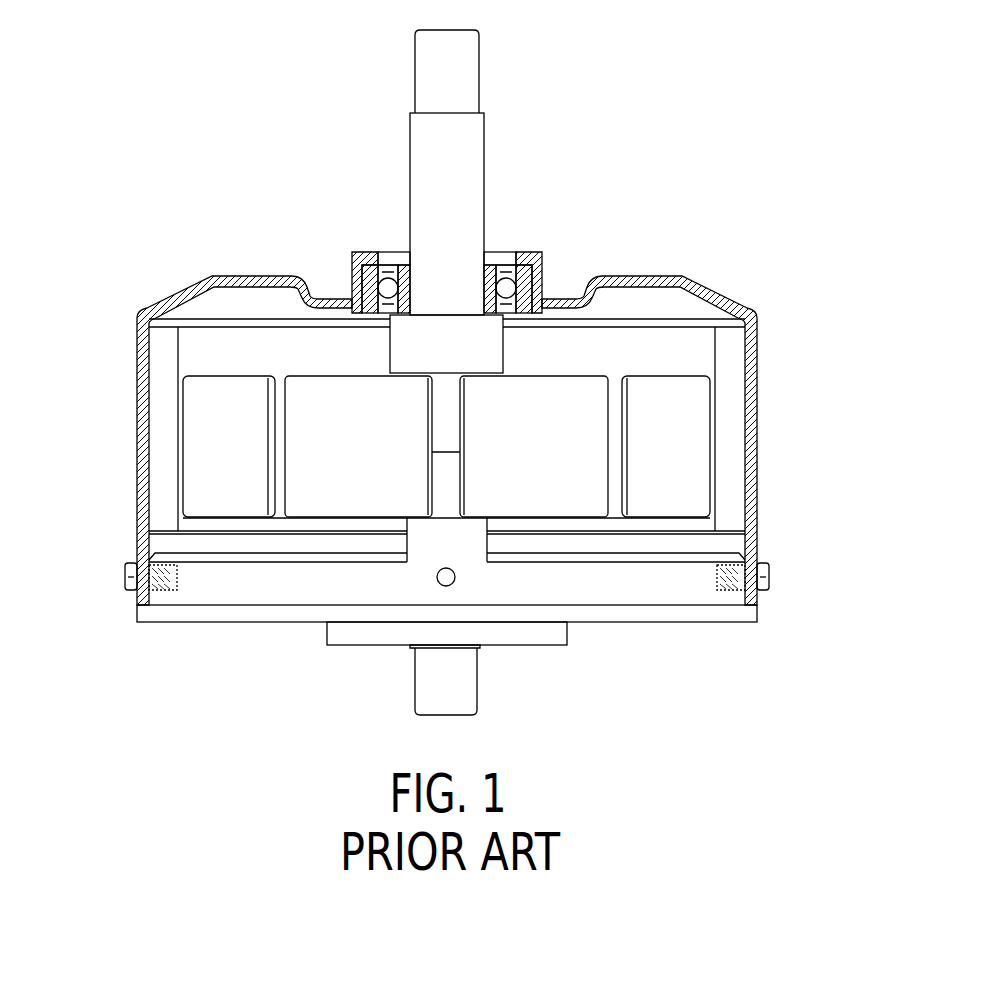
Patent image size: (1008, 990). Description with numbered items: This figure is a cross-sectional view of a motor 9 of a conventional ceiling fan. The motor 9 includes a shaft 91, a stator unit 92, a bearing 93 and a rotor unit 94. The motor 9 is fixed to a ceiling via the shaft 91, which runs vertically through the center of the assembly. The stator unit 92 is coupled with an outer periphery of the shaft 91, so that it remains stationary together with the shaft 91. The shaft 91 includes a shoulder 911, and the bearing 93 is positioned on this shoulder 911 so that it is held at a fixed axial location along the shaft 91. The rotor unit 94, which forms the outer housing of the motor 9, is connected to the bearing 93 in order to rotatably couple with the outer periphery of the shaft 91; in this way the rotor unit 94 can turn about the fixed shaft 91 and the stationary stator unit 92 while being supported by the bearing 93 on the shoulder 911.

The motor 9 is at (655, 153).
The shaft 91 is at (422, 62).
The shoulder 911 is at (402, 311).
The stator unit 92 is at (208, 437).
The bearing 93 is at (490, 268).
The rotor unit 94 is at (750, 453).